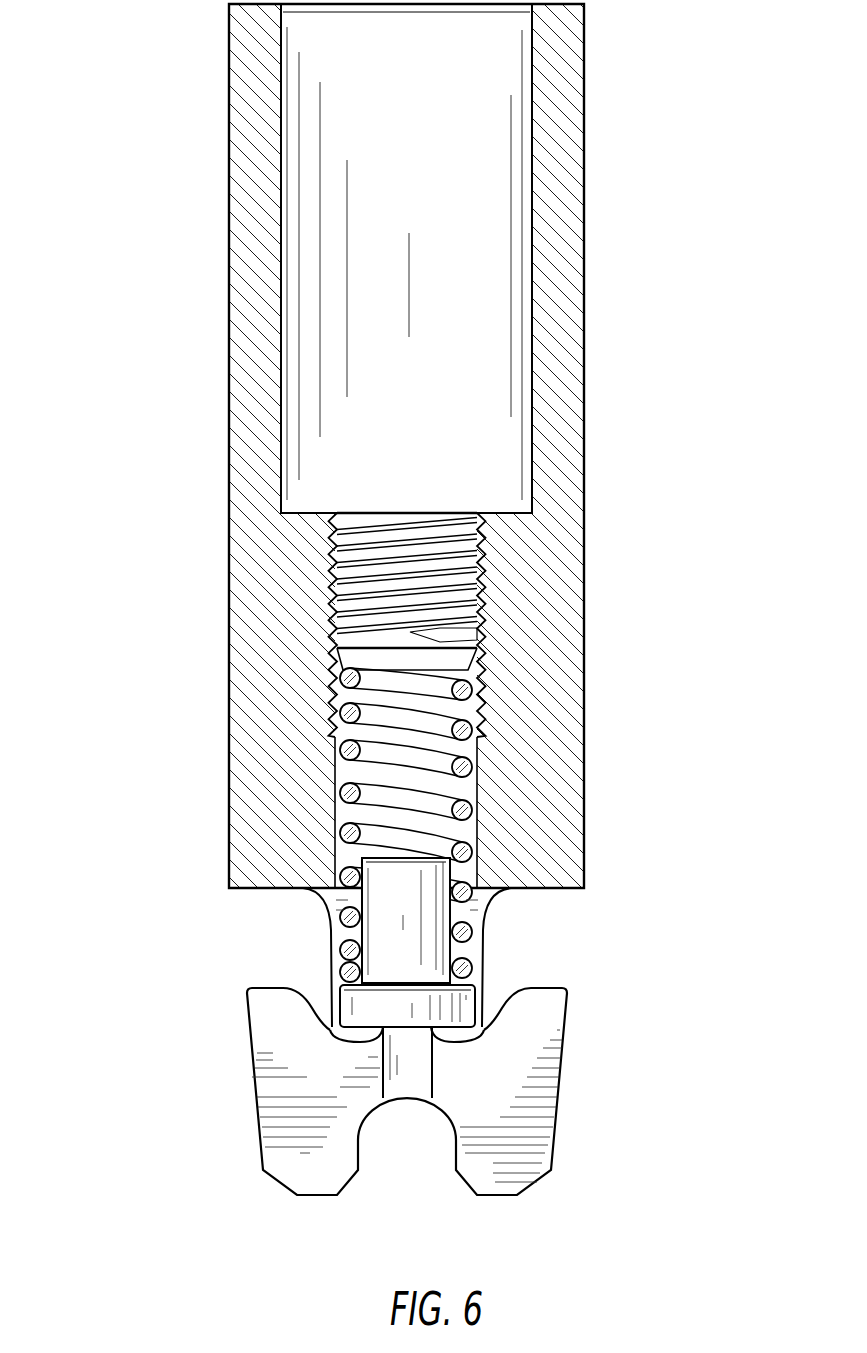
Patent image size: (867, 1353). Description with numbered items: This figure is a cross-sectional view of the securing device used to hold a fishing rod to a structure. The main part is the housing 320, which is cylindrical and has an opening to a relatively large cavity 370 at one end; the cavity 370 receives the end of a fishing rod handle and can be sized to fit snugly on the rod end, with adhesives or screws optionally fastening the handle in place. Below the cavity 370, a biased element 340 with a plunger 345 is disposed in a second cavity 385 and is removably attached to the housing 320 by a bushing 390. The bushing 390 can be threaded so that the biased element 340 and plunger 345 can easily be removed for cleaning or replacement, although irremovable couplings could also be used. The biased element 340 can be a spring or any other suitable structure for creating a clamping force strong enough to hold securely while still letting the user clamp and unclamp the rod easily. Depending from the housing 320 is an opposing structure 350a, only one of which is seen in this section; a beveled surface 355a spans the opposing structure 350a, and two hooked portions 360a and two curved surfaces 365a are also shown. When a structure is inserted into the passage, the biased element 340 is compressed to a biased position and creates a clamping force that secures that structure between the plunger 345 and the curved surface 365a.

The housing 320 is at (587, 432).
The cavity 370 is at (280, 272).
The bushing 390 is at (485, 614).
The cavity 385 is at (326, 773).
The plunger 345 is at (437, 877).
The biased element 340 is at (465, 813).
The beveled surface 355a is at (329, 928).
The opposing structure 350a is at (390, 1079).
The hooked portion 360a is at (236, 985).
The curved surface 365a is at (349, 1045).